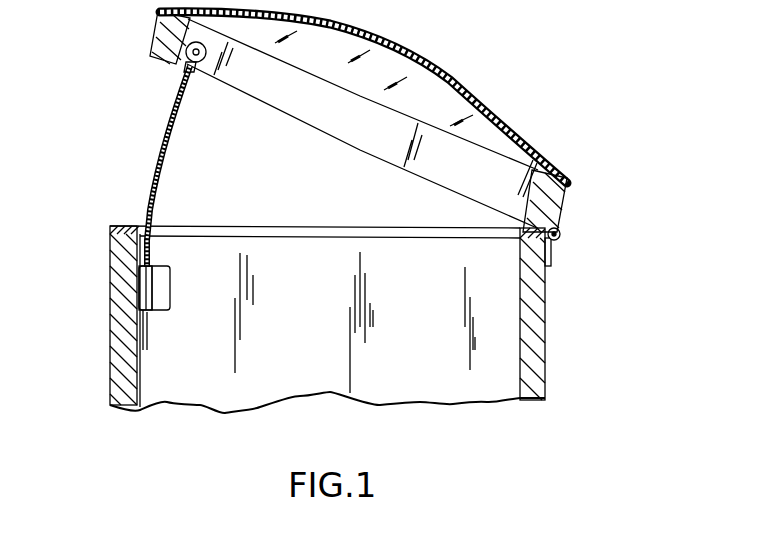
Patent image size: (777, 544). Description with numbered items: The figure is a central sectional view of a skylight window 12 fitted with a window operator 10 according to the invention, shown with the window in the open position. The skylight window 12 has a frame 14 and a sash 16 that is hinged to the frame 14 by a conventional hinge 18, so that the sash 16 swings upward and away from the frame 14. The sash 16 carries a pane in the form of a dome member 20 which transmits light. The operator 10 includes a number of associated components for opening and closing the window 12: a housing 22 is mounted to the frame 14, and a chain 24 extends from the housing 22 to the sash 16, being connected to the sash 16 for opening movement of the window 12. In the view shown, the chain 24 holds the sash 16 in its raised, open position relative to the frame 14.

The sensor assembly 10 is at (178, 281).
The lid 12 is at (406, 121).
The container wall 14 is at (123, 340).
The lid end plate 16 is at (549, 198).
The hinge pin 18 is at (562, 240).
The dome gasket band 20 is at (422, 63).
The sensor 22 is at (173, 300).
The cable 24 is at (162, 162).